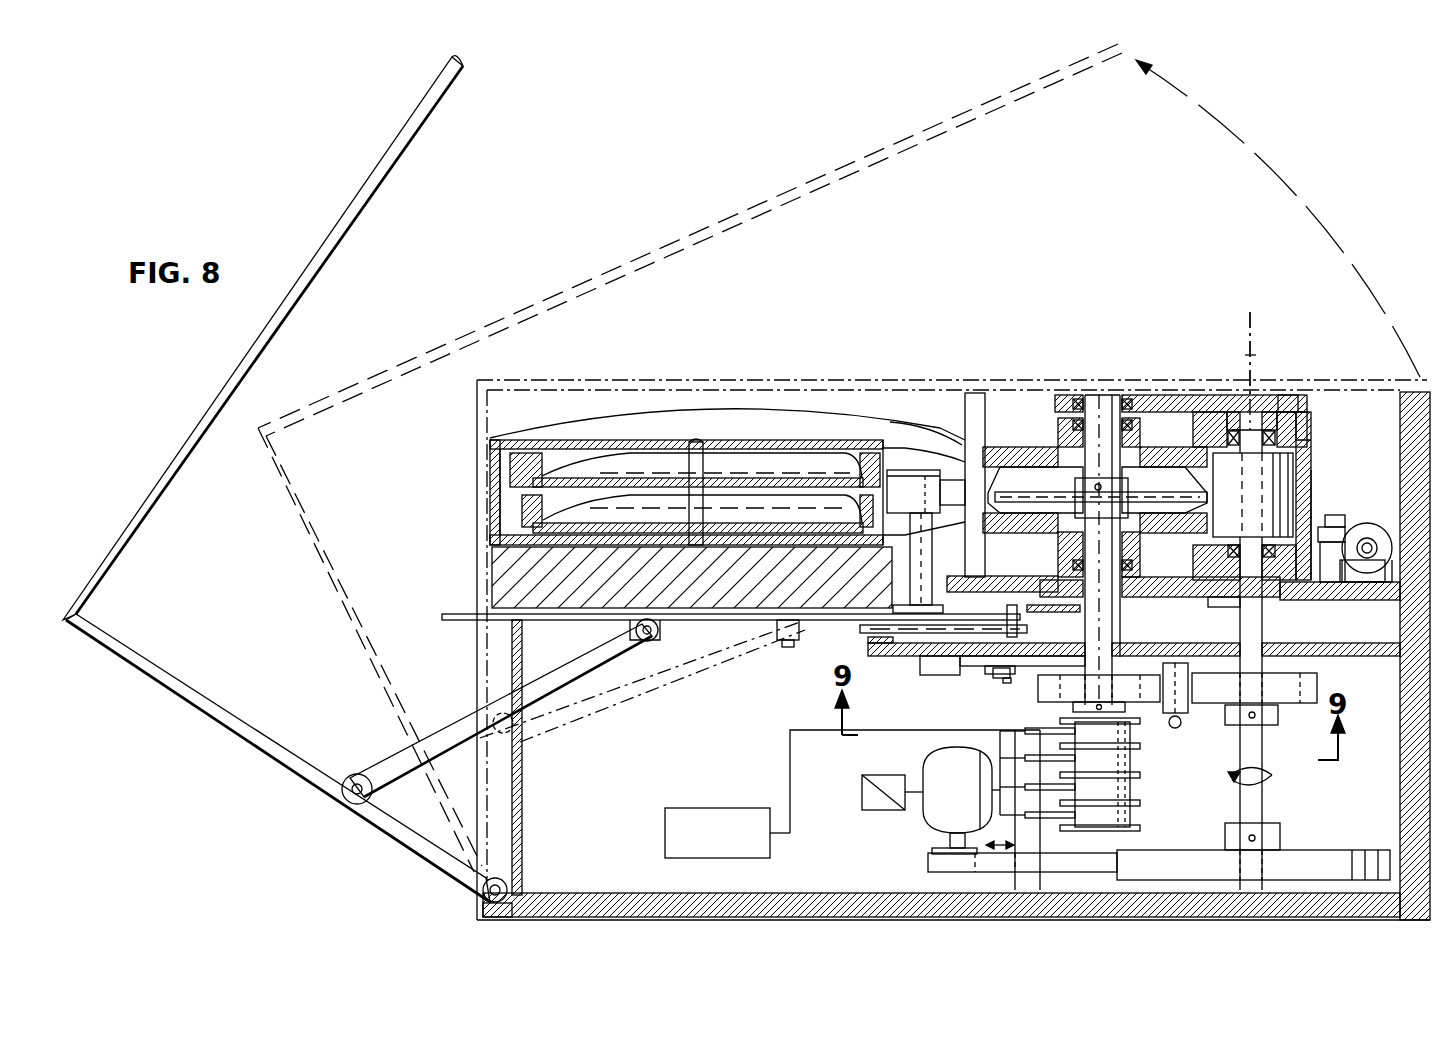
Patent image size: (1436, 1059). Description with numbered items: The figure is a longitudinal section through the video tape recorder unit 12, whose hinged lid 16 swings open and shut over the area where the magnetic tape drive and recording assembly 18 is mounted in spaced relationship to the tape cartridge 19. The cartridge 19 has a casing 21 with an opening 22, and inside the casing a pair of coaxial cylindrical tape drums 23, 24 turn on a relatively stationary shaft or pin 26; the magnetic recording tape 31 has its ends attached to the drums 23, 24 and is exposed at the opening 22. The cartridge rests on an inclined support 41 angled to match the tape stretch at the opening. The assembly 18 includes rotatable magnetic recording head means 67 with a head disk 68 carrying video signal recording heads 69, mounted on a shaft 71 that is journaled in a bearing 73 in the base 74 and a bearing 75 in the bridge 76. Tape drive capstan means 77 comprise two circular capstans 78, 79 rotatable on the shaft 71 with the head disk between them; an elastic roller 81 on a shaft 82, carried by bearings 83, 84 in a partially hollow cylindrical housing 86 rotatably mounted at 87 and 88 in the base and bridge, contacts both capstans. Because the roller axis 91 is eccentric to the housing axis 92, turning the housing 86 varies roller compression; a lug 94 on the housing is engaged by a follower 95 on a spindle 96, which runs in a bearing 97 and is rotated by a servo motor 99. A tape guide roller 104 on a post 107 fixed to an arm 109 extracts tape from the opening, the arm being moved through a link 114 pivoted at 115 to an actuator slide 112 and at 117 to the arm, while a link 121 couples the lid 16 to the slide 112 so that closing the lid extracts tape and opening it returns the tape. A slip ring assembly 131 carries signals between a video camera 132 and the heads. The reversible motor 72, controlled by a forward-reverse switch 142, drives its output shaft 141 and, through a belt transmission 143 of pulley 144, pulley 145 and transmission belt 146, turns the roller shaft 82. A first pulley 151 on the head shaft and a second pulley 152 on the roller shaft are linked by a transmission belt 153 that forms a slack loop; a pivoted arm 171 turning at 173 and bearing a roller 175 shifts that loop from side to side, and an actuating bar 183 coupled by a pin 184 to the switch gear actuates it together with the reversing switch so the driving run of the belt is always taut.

The unit 12 is at (1427, 385).
The lid 16 is at (340, 222).
The magnetic tape drive and recording assembly 18 is at (1160, 392).
The tape cartridge 19 is at (600, 412).
The casing 21 is at (540, 425).
The opening 22 is at (935, 420).
The tape drum 23 is at (660, 455).
The tape drum 24 is at (540, 512).
The shaft or pin 26 is at (730, 455).
The magnetic recording tape 31 is at (512, 468).
The support 41 is at (492, 565).
The rotatable magnetic recording head means 67 is at (1050, 460).
The head disk 68 is at (1060, 505).
The video signal recording heads 69 is at (992, 495).
The shaft 71 is at (1092, 393).
The motor 72 is at (957, 800).
The bearing 73 is at (1160, 600).
The base 74 is at (1225, 605).
The bearing 75 is at (1116, 396).
The bridge 76 is at (1190, 392).
The rotatable tape drive capstan means 77 is at (975, 430).
The tape drive capstan 78 is at (965, 458).
The tape drive capstan 79 is at (965, 455).
The roller 81 is at (1313, 432).
The shaft 82 is at (1263, 803).
The bearing 83 is at (1306, 420).
The bearing 84 is at (1215, 565).
The partially hollow cylindrical housing 86 is at (1313, 452).
The rotatable mounting 87 is at (1298, 600).
The rotatable mounting 88 is at (1290, 394).
The axis of rotation 91 is at (1252, 335).
The axis of rotation 92 is at (1258, 356).
The ear or lug 94 is at (1340, 515).
The follower 95 is at (1335, 582).
The spindle 96 is at (1367, 535).
The bearing 97 is at (1375, 582).
The servo motor 99 is at (1375, 530).
The tape guide roller 104 is at (883, 440).
The post 107 is at (933, 560).
The arm 109 is at (1012, 598).
The actuator slide 112 is at (728, 618).
The link 114 is at (905, 657).
The pivot 115 is at (787, 648).
The pivot 117 is at (1035, 604).
The link 121 is at (485, 720).
The slip ring assembly 131 is at (1132, 797).
The video camera 132 is at (772, 855).
The output shaft 141 is at (950, 842).
The forward-reverse switch 142 is at (862, 792).
The belt transmission 143 is at (1162, 850).
The pulley 144 is at (928, 866).
The pulley 145 is at (1378, 850).
The transmission belt 146 is at (1095, 852).
The first pulley 151 is at (1155, 705).
The second pulley 152 is at (1275, 710).
The transmission belt 153 is at (1305, 685).
The arm 171 is at (990, 674).
The pivot 173 is at (928, 677).
The roller 175 is at (1182, 717).
The actuating bar 183 is at (1003, 678).
The pin 184 is at (1007, 683).